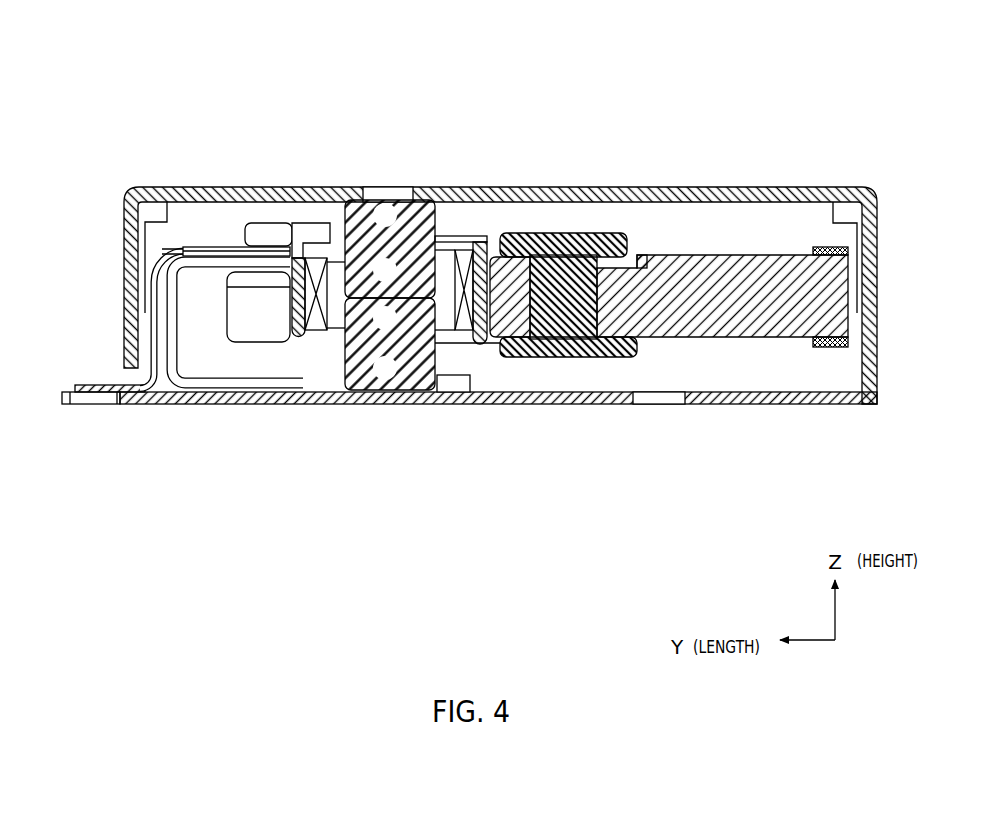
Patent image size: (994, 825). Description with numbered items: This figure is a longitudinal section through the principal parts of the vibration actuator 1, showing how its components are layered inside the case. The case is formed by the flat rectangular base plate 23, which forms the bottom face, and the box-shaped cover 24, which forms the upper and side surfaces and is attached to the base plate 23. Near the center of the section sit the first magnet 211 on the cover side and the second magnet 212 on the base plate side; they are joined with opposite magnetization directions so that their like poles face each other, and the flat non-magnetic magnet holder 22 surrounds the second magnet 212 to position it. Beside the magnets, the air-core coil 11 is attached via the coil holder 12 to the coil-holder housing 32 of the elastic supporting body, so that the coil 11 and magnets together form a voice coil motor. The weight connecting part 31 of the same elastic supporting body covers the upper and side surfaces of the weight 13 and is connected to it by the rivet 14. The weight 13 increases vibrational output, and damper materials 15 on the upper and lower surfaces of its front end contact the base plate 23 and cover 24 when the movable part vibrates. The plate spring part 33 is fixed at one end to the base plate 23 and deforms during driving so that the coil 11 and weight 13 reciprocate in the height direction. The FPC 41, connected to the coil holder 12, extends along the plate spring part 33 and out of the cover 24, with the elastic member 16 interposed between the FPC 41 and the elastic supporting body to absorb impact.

The vibration actuator 1 is at (777, 125).
The coil 11 is at (337, 272).
The coil holder 12 is at (308, 225).
The weight 13 is at (715, 255).
The rivet 14 is at (548, 248).
The damper material 15 is at (826, 247).
The elastic member 16 is at (237, 245).
The first magnet 211 is at (410, 203).
The second magnet 212 is at (405, 393).
The magnet holder 22 is at (450, 393).
The base plate 23 is at (733, 405).
The cover 24 is at (124, 268).
The weight connecting part 31 is at (637, 258).
The coil-holder housing 32 is at (318, 405).
The plate spring part 33 is at (185, 393).
The FPC 41 is at (187, 245).